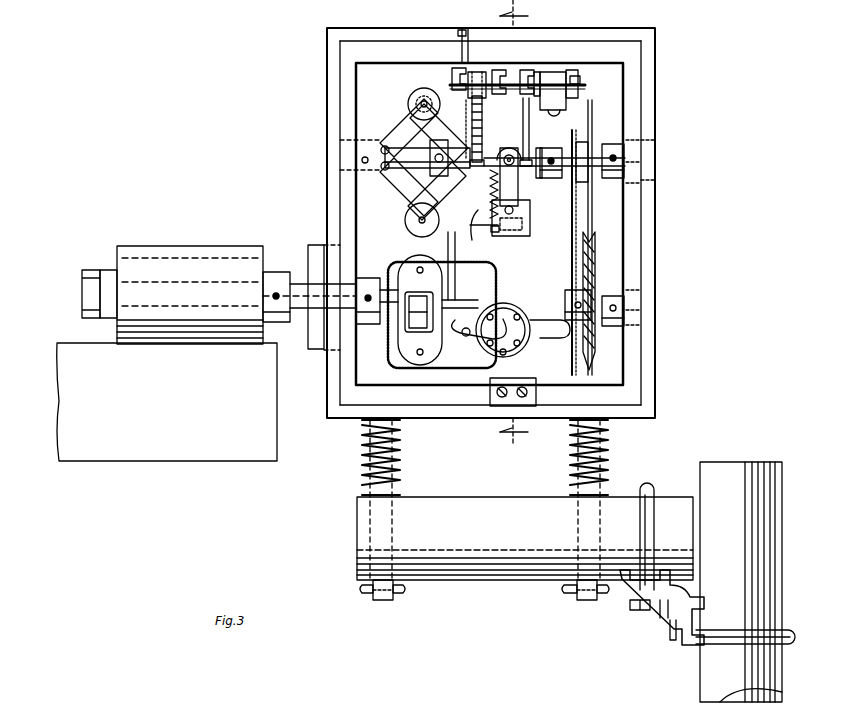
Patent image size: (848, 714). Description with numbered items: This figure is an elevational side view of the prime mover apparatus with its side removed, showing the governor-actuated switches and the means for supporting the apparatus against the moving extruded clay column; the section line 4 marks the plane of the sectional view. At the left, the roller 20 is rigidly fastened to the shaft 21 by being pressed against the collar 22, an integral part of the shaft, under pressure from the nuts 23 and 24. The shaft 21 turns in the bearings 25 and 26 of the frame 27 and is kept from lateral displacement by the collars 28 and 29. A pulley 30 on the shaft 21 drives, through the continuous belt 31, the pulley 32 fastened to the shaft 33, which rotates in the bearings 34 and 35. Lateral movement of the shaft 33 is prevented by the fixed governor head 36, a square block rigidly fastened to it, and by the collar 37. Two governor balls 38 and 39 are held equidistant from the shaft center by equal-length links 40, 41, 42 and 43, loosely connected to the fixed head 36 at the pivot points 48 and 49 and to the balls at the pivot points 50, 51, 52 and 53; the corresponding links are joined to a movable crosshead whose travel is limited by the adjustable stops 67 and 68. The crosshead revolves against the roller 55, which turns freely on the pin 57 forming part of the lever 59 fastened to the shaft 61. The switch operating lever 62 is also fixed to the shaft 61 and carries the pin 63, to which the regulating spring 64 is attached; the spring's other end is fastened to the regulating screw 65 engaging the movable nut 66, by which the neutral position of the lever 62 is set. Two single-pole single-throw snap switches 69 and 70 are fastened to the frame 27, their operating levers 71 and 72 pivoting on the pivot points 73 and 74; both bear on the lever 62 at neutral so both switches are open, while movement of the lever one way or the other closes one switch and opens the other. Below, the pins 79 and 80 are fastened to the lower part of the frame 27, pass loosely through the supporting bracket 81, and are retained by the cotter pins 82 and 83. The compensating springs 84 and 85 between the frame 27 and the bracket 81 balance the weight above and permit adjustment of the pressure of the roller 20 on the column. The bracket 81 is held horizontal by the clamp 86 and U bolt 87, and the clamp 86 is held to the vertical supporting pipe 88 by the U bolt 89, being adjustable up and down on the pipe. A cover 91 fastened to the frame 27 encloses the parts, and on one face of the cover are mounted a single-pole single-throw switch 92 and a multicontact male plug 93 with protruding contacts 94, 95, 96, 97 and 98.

The section line 4- 4 is at (514, 227).
The roller 20 is at (197, 256).
The shaft 21 is at (297, 290).
The collar 22 is at (274, 272).
The nut 23 is at (108, 270).
The nut 24 is at (90, 270).
The bearing 25 is at (316, 350).
The bearing 26 is at (640, 318).
The frame 27 is at (655, 245).
The collar 28 is at (369, 324).
The collar 29 is at (612, 326).
The pulley 30 is at (595, 258).
The continuous belt 31 is at (590, 225).
The pulley 32 is at (590, 143).
The shaft 33 is at (563, 156).
The bearing 34 is at (340, 155).
The bearing 35 is at (652, 140).
The fixed governor head 36 is at (358, 185).
The collar 37 is at (625, 140).
The governor ball 38 is at (407, 100).
The governor ball 39 is at (412, 222).
The link 40 is at (395, 125).
The link 41 is at (468, 130).
The link 42 is at (398, 190).
The link 43 is at (445, 190).
The pivot point 48 is at (382, 146).
The pivot point 49 is at (382, 172).
The pivot point 50 is at (418, 96).
The pivot point 51 is at (418, 231).
The pivot point 52 is at (482, 140).
The pivot point 53 is at (489, 201).
The roller 55 is at (523, 150).
The pin 57 is at (515, 180).
The lever 59 is at (532, 190).
The shaft 61 is at (514, 210).
The switch operating lever 62 is at (523, 130).
The pin 63 is at (470, 228).
The regulating spring 64 is at (466, 226).
The regulating screw 65 is at (482, 128).
The movable nut 66 is at (460, 52).
The adjustable stop 67 is at (427, 155).
The adjustable stop 68 is at (546, 146).
The snap switch 69 is at (452, 78).
The snap switch 70 is at (578, 80).
The operating lever 71 is at (508, 75).
The operating lever 72 is at (525, 75).
The pivot point 73 is at (488, 78).
The pivot point 74 is at (545, 73).
The pin 79 is at (384, 600).
The pin 80 is at (585, 600).
The supporting bracket 81 is at (477, 505).
The cotter pin 82 is at (404, 596).
The cotter pin 83 is at (604, 597).
The compensating spring 84 is at (404, 470).
The compensating spring 85 is at (606, 460).
The clamp 86 is at (686, 655).
The U bolt 87 is at (651, 490).
The vertical supporting pipe 88 is at (778, 545).
The U bolt 89 is at (790, 632).
The cover 91 is at (640, 35).
The single-pole single-throw switch 92 is at (394, 272).
The multicontact male plug 93 is at (524, 360).
The contact 94 is at (390, 362).
The contact 95 is at (462, 339).
The contact 96 is at (456, 266).
The contact 97 is at (569, 80).
The contact 98 is at (574, 100).